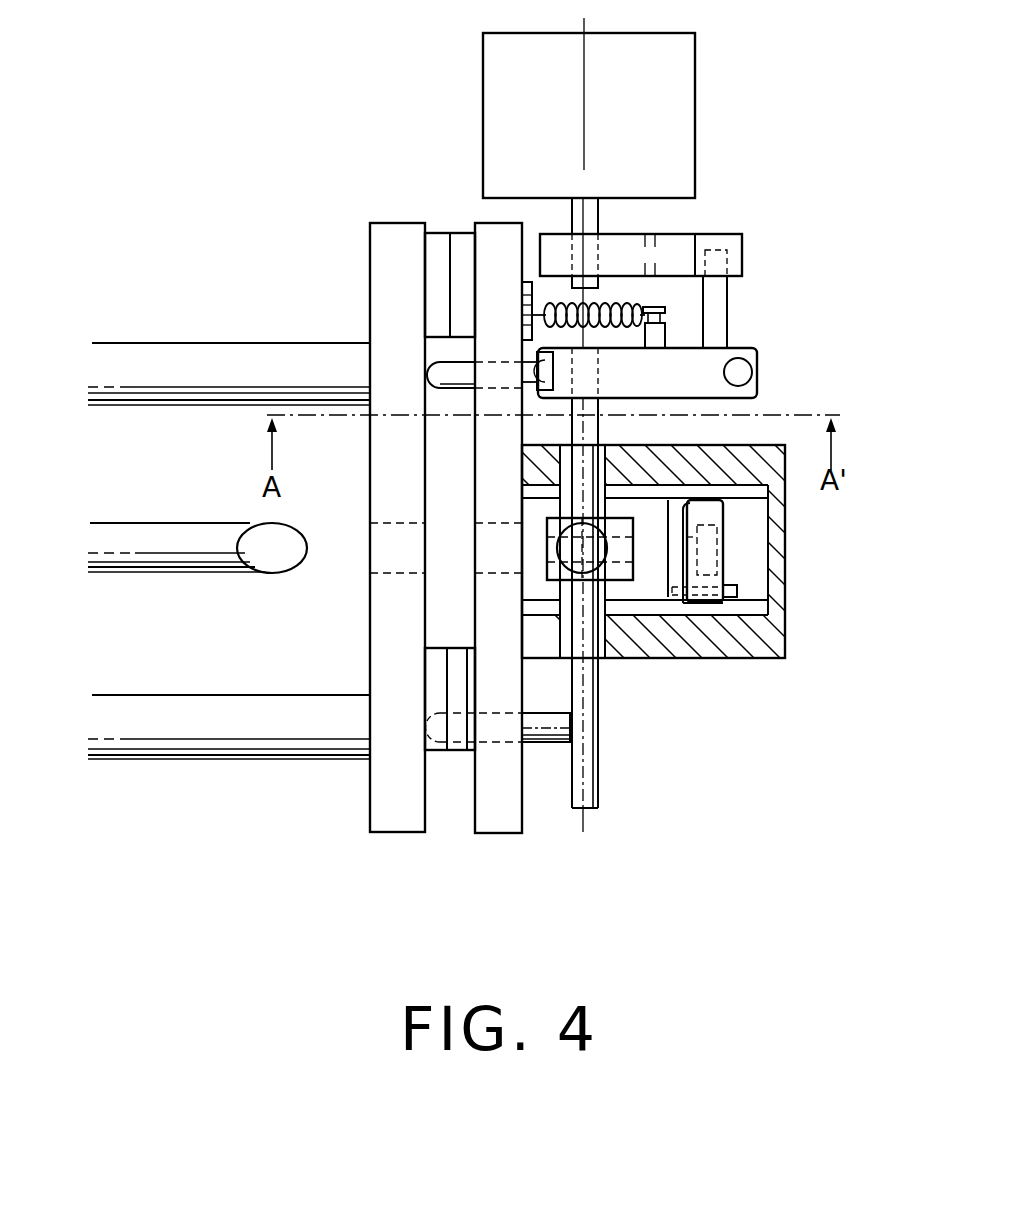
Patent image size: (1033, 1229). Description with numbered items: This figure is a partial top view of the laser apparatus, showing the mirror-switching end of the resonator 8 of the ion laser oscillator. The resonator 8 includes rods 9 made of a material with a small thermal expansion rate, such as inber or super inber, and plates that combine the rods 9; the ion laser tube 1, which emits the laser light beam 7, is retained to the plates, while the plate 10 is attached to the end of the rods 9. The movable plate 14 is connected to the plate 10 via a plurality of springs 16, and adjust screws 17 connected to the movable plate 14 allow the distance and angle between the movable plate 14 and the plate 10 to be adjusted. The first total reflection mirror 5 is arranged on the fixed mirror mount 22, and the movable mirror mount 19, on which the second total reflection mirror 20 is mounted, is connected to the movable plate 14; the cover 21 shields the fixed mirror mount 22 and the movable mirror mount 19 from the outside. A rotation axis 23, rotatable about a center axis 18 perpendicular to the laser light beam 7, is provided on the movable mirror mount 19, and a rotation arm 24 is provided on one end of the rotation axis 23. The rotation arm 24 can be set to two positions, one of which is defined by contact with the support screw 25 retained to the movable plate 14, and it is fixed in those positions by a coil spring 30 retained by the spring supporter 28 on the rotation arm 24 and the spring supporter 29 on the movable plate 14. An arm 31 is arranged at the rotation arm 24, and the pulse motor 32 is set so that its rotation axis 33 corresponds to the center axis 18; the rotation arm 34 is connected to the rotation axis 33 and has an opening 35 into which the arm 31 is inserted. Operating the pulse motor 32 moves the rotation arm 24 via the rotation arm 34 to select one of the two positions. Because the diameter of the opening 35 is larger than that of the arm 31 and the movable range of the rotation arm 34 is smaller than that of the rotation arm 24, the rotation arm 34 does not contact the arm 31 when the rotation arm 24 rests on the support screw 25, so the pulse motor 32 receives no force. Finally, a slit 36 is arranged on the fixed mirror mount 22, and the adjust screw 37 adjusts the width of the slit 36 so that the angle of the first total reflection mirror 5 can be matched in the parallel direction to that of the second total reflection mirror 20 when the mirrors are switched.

The ion laser tube 1 is at (125, 575).
The first total reflection mirror 5 is at (728, 563).
The laser light beam 7 is at (108, 523).
The resonator 8 is at (120, 343).
The rods 9 is at (187, 343).
The plate 10 is at (370, 800).
The movable plate 14 is at (492, 833).
The springs 16 is at (445, 233).
The adjust screws 17 is at (440, 375).
The center axis 18 is at (588, 817).
The movable mirror mount 19 is at (622, 583).
The second total reflection mirror 20 is at (635, 553).
The cover 21 is at (740, 630).
The fixed mirror mount 22 is at (733, 510).
The rotation axis 23 is at (598, 783).
The rotation arm 24 is at (760, 365).
The support screw 25 is at (545, 365).
The spring supporter 28 is at (672, 323).
The spring supporter 29 is at (522, 290).
The coil spring 30 is at (613, 303).
The arm 31 is at (730, 332).
The pulse motor 32 is at (695, 60).
The rotation axis 33 is at (603, 234).
The rotation arm 34 is at (742, 252).
The opening 35 is at (720, 234).
The slit 36 is at (683, 603).
The adjust screw 37 is at (738, 590).